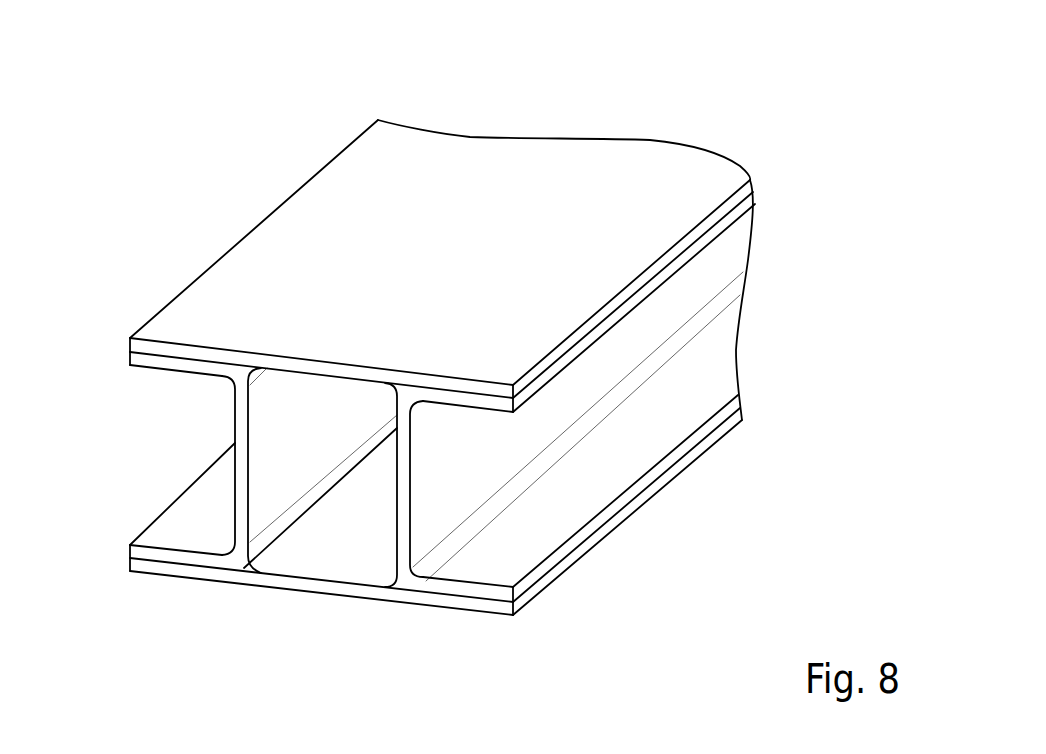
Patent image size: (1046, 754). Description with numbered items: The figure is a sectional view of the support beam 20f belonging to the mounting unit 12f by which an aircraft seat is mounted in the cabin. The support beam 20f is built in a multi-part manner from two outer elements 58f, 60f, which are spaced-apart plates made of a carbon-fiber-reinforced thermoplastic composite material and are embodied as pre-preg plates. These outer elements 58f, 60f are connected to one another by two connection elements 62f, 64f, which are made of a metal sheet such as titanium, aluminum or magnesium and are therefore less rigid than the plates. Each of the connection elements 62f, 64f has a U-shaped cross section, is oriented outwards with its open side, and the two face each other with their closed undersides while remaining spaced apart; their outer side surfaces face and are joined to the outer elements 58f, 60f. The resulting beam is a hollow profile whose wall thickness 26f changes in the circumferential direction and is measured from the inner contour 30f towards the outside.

The mounting unit 12f is at (412, 334).
The support beam 20f is at (465, 126).
The outer element 58f is at (178, 355).
The inner contour 30f is at (273, 490).
The connection element 62f is at (293, 445).
The wall thickness 26f is at (438, 497).
The connection element 64f is at (467, 457).
The outer element 60f is at (352, 540).